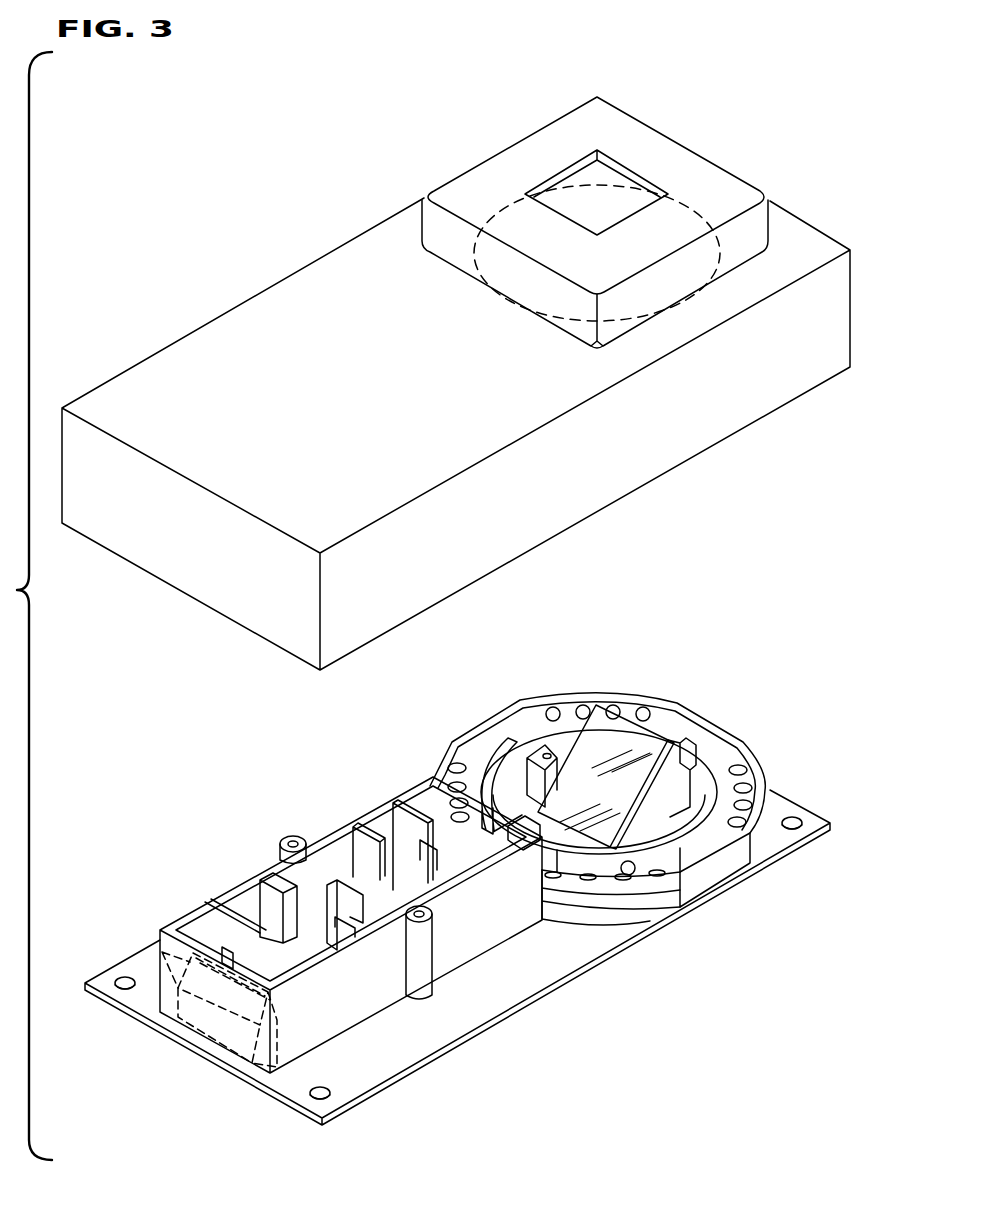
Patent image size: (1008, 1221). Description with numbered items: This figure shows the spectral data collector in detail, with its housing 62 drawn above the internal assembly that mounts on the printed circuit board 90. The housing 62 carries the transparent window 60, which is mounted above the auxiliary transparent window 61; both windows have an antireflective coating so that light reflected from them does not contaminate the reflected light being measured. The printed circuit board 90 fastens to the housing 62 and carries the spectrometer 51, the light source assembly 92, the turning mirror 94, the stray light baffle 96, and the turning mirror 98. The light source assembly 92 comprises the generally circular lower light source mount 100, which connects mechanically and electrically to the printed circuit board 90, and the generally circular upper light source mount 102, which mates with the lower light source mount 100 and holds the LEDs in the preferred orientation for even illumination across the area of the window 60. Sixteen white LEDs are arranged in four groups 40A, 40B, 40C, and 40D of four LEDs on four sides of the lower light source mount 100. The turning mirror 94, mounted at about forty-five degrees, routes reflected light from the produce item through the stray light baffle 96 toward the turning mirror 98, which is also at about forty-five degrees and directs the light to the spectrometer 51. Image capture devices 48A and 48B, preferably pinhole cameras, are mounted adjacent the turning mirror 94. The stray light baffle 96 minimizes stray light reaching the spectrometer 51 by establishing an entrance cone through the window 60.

The group of LEDs 40A is at (556, 706).
The group of LEDs 40B is at (747, 770).
The group of LEDs 40C is at (636, 870).
The group of LEDs 40D is at (450, 765).
The image capture device 48A is at (537, 753).
The image capture device 48B is at (674, 740).
The spectrometer 51 is at (157, 947).
The transparent window 60 is at (607, 163).
The auxiliary transparent window 61 is at (587, 180).
The housing 62 is at (578, 497).
The printed circuit board 90 is at (445, 1045).
The light source assembly 92 is at (757, 744).
The turning mirror 94 is at (620, 735).
The stray light baffle 96 is at (333, 1013).
The turning mirror 98 is at (277, 1065).
The lower light source mount 100 is at (586, 913).
The upper light source mount 102 is at (695, 877).